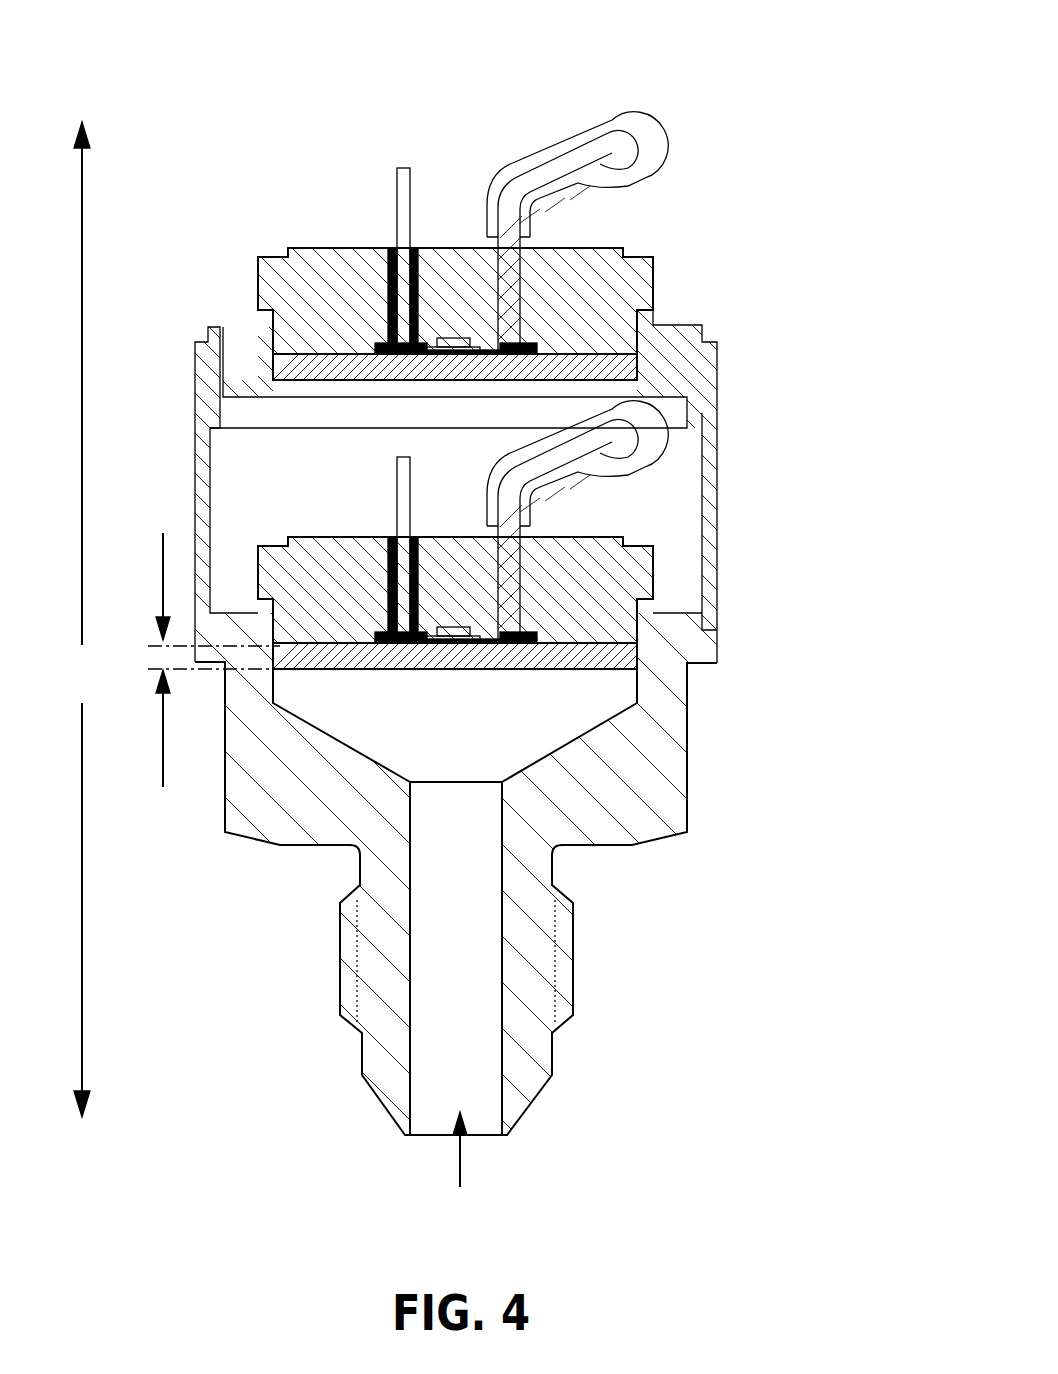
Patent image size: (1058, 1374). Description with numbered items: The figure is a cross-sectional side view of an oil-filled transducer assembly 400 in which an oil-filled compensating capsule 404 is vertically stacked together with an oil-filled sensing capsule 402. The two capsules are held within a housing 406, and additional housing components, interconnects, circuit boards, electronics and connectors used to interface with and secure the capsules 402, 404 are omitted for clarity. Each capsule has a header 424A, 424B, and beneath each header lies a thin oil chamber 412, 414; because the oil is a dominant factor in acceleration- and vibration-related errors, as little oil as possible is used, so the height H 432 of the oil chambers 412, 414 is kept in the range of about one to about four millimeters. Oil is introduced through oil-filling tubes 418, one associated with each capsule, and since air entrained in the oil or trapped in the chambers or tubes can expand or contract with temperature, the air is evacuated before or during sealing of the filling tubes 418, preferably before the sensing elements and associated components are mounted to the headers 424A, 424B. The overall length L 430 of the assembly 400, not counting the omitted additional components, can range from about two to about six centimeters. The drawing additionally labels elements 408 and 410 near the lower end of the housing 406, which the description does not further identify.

The oil-filled transducer assembly 400 is at (452, 83).
The oil-filled sensing capsule 402 is at (780, 652).
The oil-filled compensating capsule 404 is at (775, 372).
The housing 406 is at (320, 806).
The pressure inlet 408 is at (460, 1160).
The pressure passage 410 is at (455, 902).
The oil chamber 412 is at (300, 653).
The oil chamber 414 is at (373, 370).
The oil-filling tube 418 is at (580, 182).
The header 424A is at (318, 285).
The header 424B is at (590, 550).
The length L 430 is at (82, 566).
The height H 432 is at (163, 758).